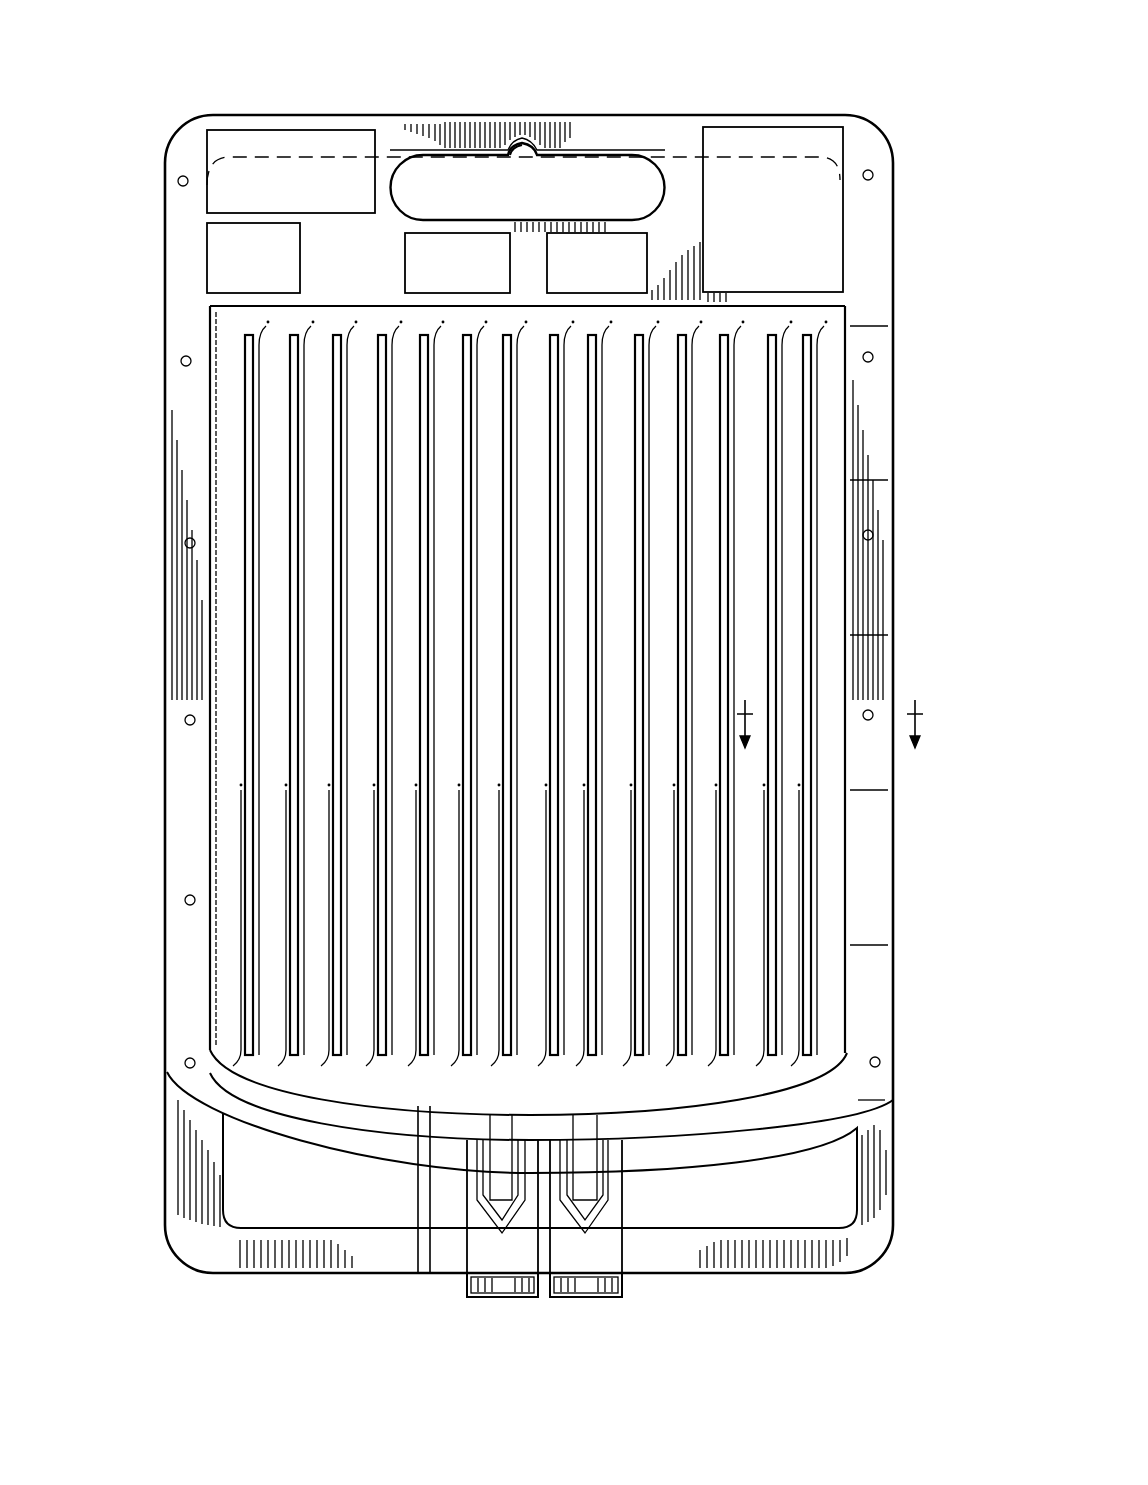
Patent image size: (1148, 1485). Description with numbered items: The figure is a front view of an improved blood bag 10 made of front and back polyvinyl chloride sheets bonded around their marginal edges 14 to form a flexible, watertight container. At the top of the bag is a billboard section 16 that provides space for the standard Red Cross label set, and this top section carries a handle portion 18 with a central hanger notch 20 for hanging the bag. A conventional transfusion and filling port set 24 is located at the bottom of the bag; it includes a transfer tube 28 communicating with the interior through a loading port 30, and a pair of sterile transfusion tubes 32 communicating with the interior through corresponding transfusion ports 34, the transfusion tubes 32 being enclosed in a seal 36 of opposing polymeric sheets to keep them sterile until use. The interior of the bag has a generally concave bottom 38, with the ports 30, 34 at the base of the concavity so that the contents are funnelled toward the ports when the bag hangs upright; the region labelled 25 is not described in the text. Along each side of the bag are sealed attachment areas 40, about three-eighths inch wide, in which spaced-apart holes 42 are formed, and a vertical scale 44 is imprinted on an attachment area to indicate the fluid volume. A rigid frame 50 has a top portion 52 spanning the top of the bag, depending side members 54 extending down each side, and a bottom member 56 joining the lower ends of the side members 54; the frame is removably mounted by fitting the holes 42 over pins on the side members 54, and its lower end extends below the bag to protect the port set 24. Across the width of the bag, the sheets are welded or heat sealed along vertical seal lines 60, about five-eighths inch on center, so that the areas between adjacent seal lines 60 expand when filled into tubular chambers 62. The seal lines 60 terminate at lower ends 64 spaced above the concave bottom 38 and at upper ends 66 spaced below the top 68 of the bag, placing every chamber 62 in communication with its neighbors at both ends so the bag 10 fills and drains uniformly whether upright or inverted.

The blood bag 10 is at (519, 725).
The marginal edges 14 is at (850, 76).
The top billboard section 16 is at (377, 112).
The handle portion 18 is at (610, 186).
The central hanger notch 20 is at (521, 158).
The transfusion and filling port set 24 is at (510, 1310).
The bottom seal region 25 is at (640, 1176).
The transfer tube 28 is at (418, 1203).
The loading port 30 is at (437, 1087).
The sterile transfusion tubes 32 is at (543, 1170).
The transfusion ports 34 is at (608, 1085).
The seal 36 is at (519, 1300).
The concave bottom 38 is at (551, 1095).
The attachment areas 40 is at (186, 816).
The holes 42 is at (186, 902).
The vertical scale 44 is at (887, 790).
The rigid frame 50 is at (498, 1199).
The top portion 52 is at (268, 148).
The side members 54 is at (178, 462).
The bottom member 56 is at (290, 1258).
The vertical seal lines 60 is at (528, 663).
The tubular chambers 62 is at (786, 526).
The lower ends of seal lines 64 is at (690, 1060).
The upper ends of seal lines 66 is at (343, 332).
The top of the bag 68 is at (721, 306).